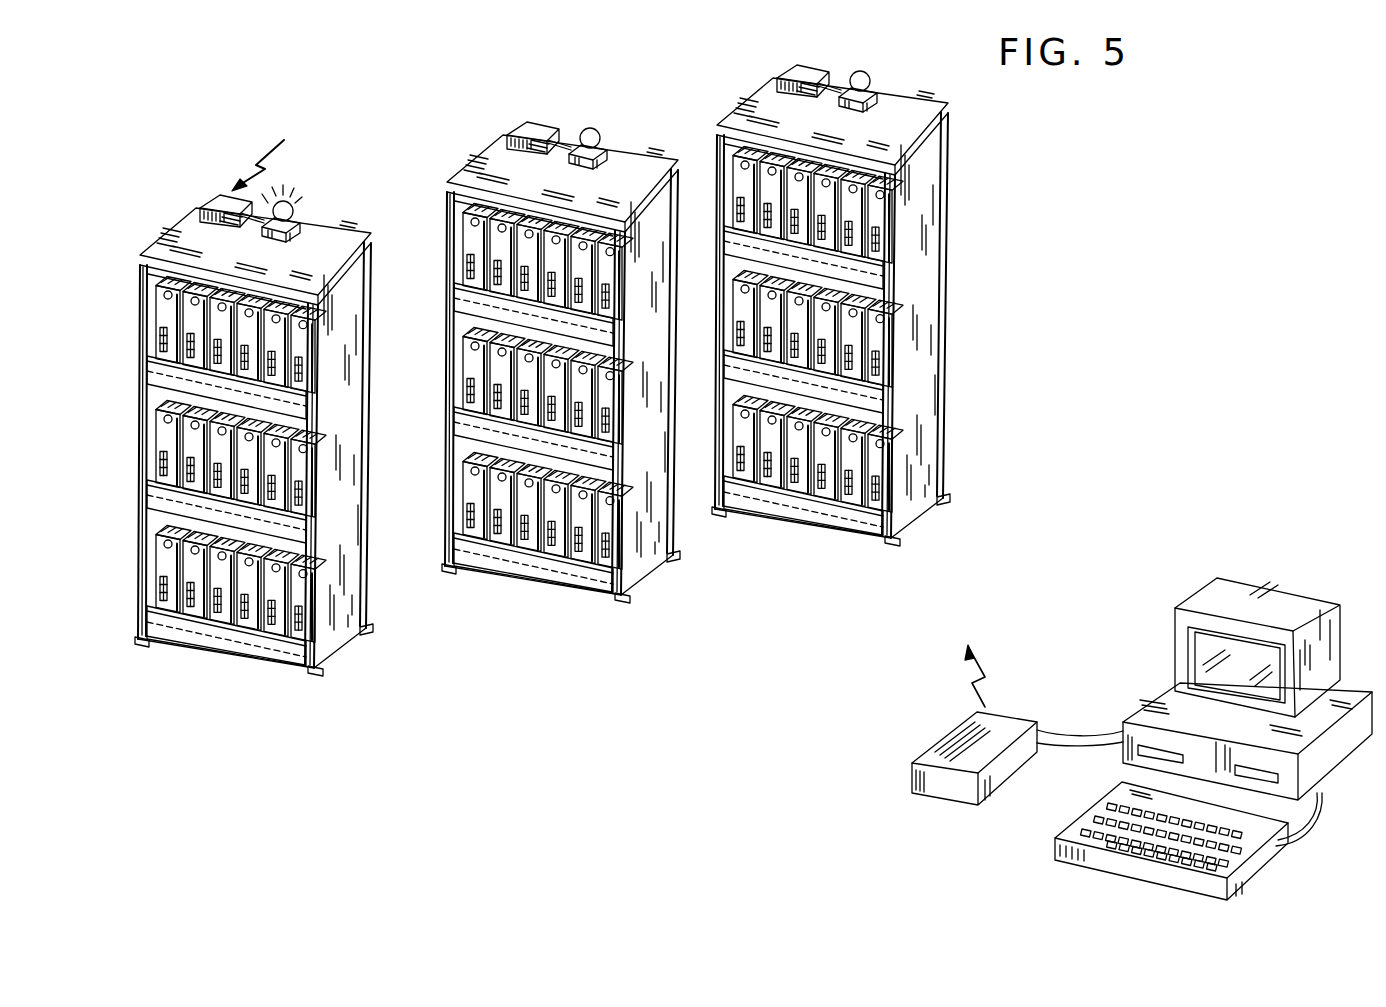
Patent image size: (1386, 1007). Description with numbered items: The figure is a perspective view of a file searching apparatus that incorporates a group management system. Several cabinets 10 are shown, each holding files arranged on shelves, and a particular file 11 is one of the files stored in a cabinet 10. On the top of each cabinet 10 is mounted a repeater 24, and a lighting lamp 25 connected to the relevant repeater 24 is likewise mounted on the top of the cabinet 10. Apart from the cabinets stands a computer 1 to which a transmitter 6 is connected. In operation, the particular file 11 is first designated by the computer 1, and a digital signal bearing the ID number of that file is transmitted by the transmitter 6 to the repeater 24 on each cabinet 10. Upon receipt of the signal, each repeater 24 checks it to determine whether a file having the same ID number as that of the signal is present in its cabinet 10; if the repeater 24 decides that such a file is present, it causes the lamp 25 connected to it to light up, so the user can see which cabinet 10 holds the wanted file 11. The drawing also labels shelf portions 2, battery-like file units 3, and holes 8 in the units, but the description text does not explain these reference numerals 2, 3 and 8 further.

The computer 1 is at (1348, 697).
The shelf plate 2 is at (145, 377).
The battery 3 is at (162, 343).
The transmitter 6 is at (940, 747).
The battery terminal hole 8 is at (168, 295).
The cabinet 10 is at (360, 357).
The file 11 is at (178, 305).
The repeater 24 is at (212, 198).
The lighting lamp 25 is at (300, 223).